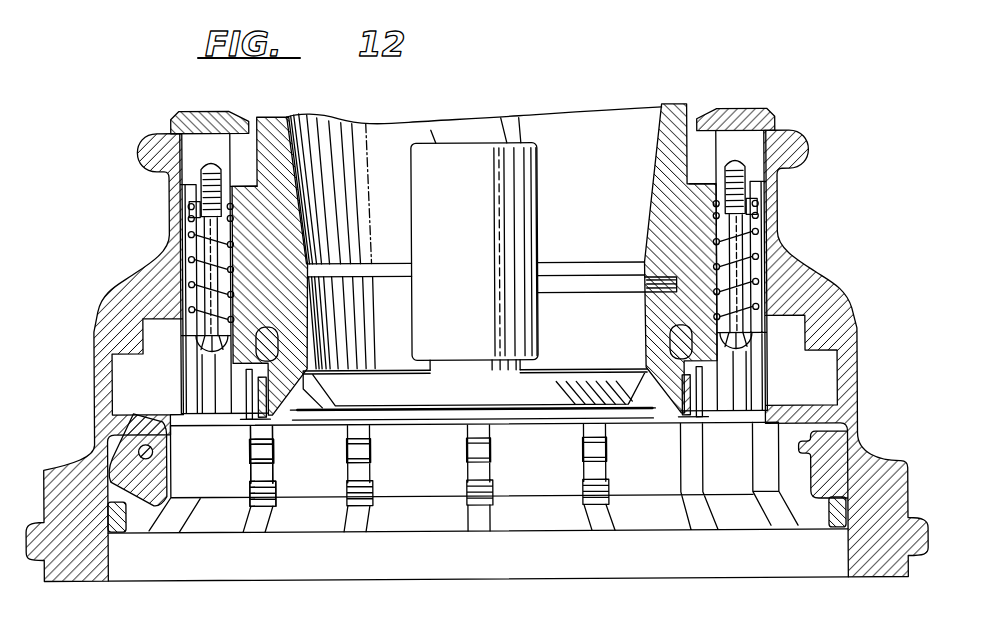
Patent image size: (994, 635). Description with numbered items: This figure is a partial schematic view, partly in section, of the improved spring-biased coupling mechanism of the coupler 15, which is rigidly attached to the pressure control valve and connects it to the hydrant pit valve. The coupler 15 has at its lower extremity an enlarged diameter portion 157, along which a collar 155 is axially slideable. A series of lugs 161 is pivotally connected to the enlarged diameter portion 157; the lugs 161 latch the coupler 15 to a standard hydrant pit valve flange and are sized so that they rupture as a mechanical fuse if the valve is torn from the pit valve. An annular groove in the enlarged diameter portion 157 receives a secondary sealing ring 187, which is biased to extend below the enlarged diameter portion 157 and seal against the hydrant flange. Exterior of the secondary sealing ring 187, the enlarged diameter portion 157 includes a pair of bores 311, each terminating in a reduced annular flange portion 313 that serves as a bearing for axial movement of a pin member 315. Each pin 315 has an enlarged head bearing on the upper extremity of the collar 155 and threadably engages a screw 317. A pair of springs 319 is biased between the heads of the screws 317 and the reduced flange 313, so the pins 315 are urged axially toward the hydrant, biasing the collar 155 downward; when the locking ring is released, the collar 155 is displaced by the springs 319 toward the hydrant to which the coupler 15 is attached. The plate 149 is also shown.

The coupler 15 is at (475, 328).
The valve seat plate 149 is at (400, 388).
The collar 155 is at (826, 298).
The enlarged diameter portion 157 is at (674, 116).
The lugs 161 is at (137, 462).
The secondary sealing ring 187 is at (250, 392).
The bores 311 is at (195, 213).
The reduced annular flange portion 313 is at (188, 186).
The pin member 315 is at (200, 115).
The screw 317 is at (211, 293).
The springs 319 is at (190, 236).